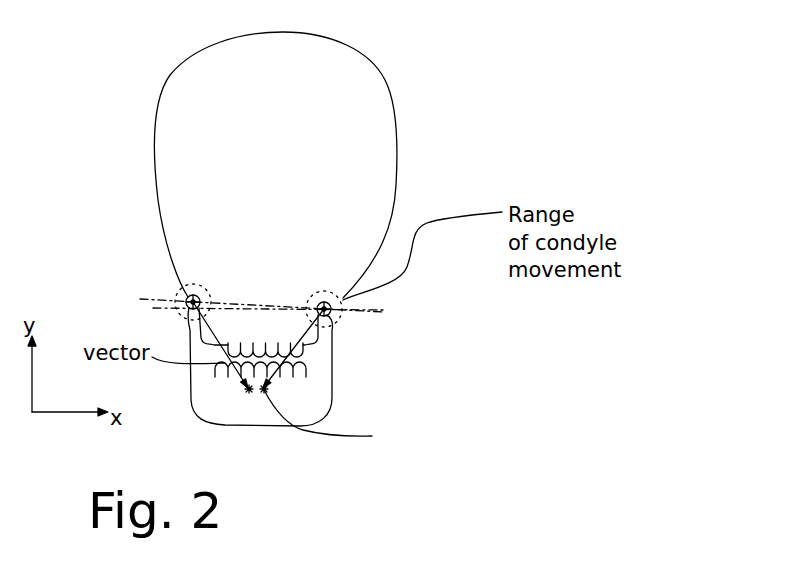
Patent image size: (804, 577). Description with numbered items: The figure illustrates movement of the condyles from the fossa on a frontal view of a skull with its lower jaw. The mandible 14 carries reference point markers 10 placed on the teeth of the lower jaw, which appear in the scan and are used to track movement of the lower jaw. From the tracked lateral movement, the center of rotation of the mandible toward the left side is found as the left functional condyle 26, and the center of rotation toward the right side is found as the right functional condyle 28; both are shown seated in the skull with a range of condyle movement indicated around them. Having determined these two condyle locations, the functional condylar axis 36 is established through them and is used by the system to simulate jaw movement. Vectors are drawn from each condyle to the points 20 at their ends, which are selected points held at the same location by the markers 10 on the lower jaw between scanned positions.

The reference point marker 10 is at (262, 390).
The mandible 14 is at (228, 399).
The points 20 is at (266, 388).
The left functional condyle 26 is at (343, 301).
The right functional condyle 28 is at (190, 298).
The functional condylar axis 36 is at (228, 300).